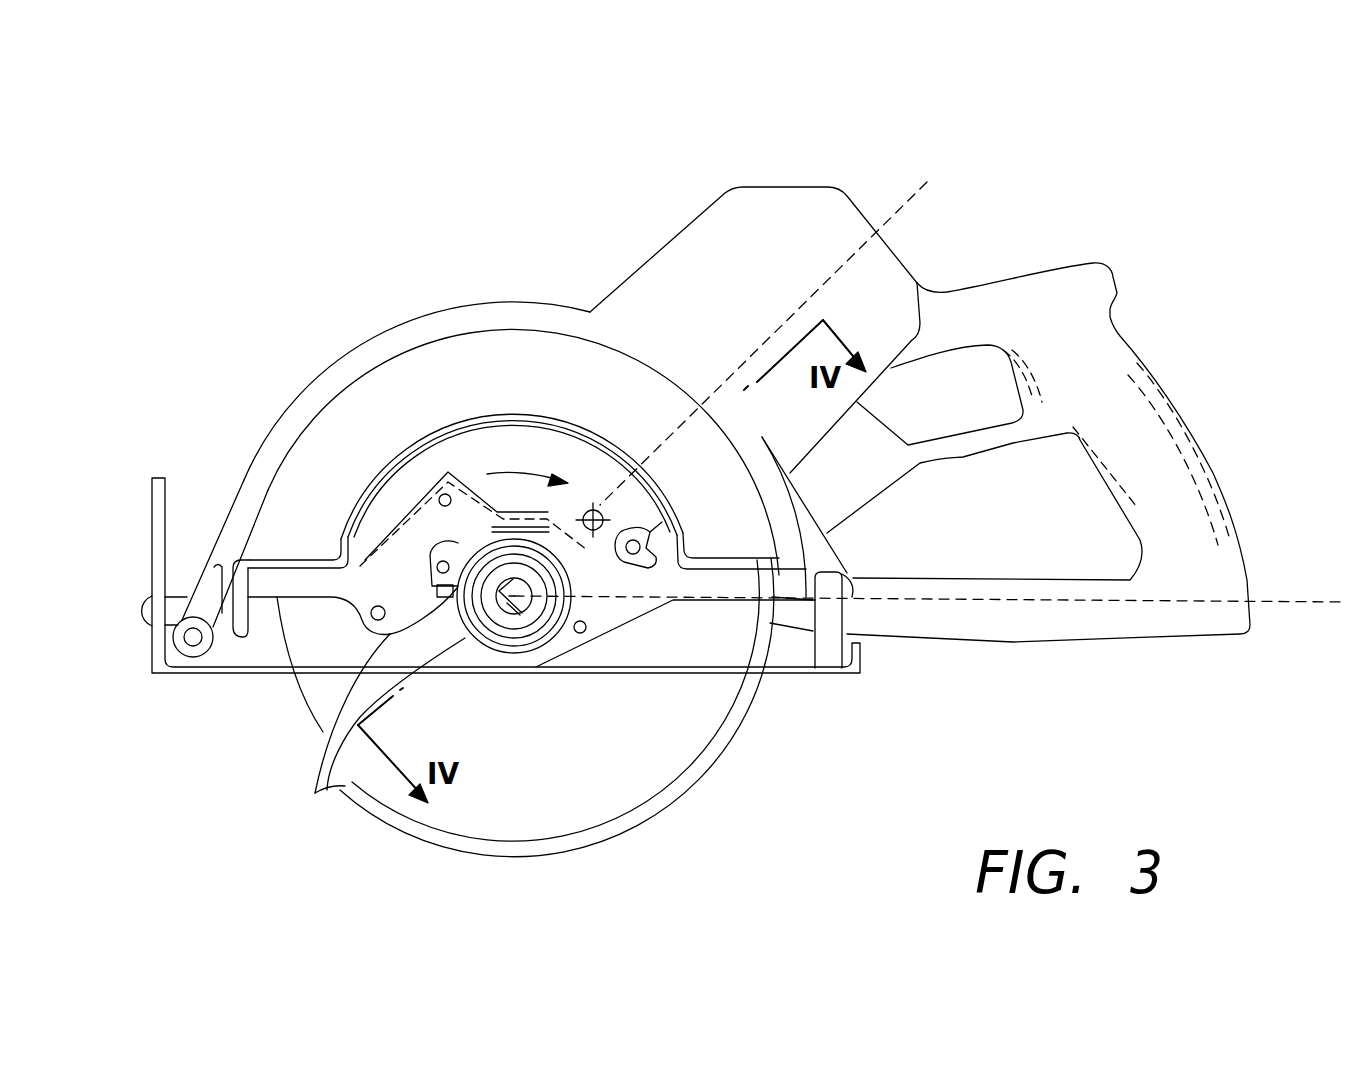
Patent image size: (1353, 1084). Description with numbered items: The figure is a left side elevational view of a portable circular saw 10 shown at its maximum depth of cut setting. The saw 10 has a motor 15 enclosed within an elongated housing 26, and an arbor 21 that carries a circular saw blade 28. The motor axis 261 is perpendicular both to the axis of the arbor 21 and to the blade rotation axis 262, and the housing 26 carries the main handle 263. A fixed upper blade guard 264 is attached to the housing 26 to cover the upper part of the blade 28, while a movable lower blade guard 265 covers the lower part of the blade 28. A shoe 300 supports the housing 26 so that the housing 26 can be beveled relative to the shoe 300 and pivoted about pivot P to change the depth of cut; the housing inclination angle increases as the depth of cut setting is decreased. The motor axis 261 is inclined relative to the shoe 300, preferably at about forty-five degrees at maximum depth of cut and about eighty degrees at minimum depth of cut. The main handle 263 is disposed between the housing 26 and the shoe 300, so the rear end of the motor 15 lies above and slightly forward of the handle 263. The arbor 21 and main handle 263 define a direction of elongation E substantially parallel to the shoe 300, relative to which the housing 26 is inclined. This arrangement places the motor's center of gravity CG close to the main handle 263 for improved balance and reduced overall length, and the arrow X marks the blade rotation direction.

The portable circular saw 10 is at (618, 266).
The motor 15 is at (788, 240).
The elongated housing 26 is at (752, 284).
The motor axis 261 is at (897, 212).
The blade rotation axis 262 is at (525, 608).
The main handle 263 is at (1147, 413).
The fixed upper blade guard 264 is at (462, 378).
The movable lower blade guard 265 is at (657, 740).
The arbor 21 is at (492, 632).
The circular saw blade 28 is at (322, 690).
The shoe 300 is at (805, 670).
The pivot P is at (193, 640).
The direction of elongation E is at (1070, 603).
The center of gravity CG is at (607, 513).
The blade rotation direction X is at (512, 468).